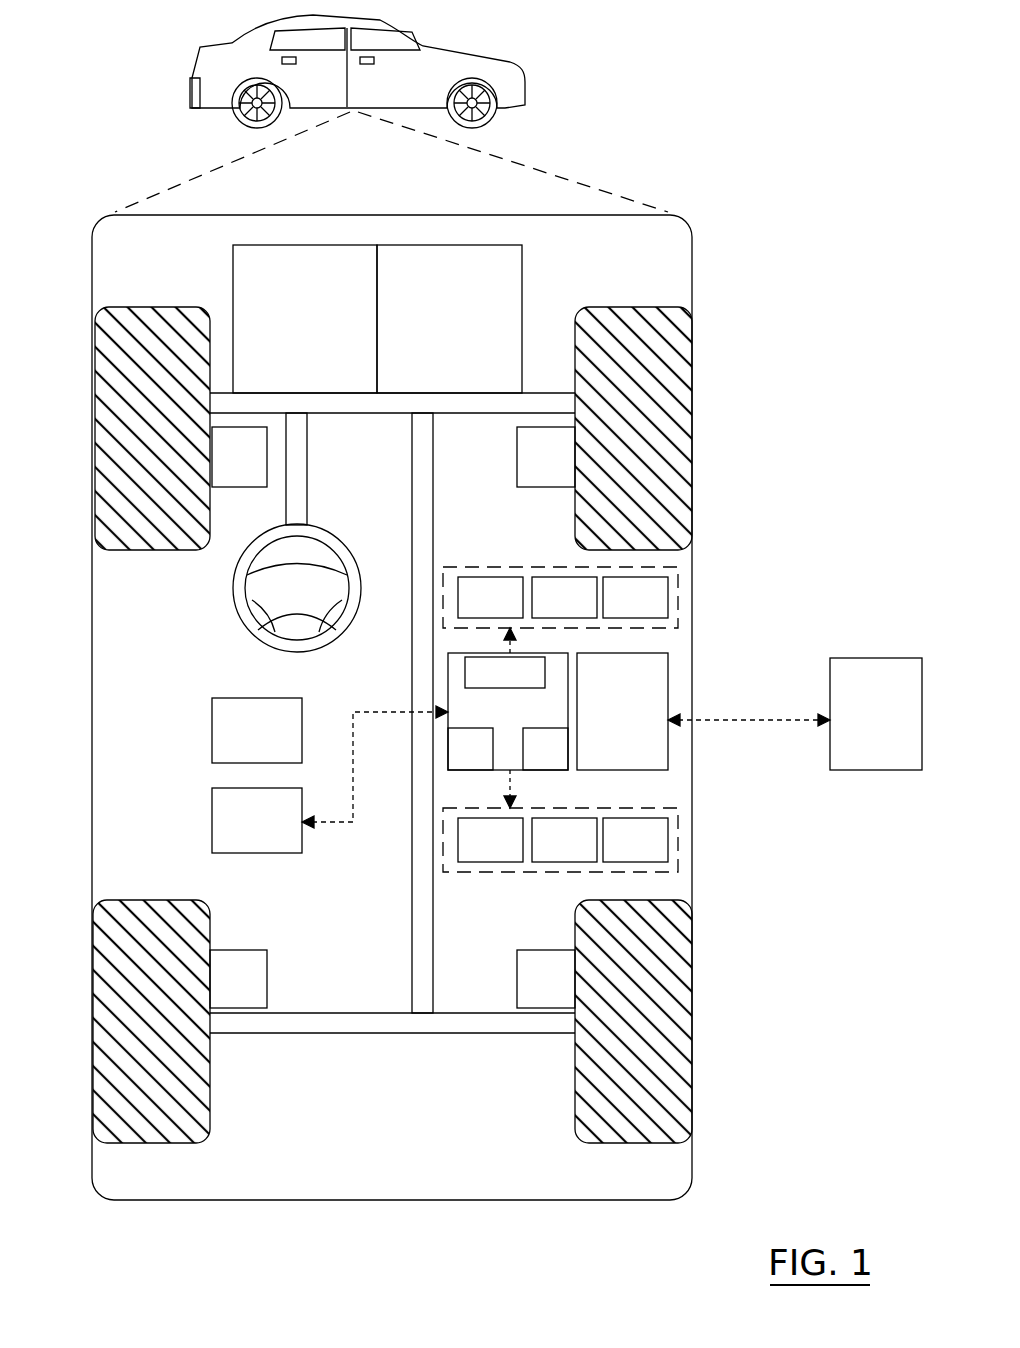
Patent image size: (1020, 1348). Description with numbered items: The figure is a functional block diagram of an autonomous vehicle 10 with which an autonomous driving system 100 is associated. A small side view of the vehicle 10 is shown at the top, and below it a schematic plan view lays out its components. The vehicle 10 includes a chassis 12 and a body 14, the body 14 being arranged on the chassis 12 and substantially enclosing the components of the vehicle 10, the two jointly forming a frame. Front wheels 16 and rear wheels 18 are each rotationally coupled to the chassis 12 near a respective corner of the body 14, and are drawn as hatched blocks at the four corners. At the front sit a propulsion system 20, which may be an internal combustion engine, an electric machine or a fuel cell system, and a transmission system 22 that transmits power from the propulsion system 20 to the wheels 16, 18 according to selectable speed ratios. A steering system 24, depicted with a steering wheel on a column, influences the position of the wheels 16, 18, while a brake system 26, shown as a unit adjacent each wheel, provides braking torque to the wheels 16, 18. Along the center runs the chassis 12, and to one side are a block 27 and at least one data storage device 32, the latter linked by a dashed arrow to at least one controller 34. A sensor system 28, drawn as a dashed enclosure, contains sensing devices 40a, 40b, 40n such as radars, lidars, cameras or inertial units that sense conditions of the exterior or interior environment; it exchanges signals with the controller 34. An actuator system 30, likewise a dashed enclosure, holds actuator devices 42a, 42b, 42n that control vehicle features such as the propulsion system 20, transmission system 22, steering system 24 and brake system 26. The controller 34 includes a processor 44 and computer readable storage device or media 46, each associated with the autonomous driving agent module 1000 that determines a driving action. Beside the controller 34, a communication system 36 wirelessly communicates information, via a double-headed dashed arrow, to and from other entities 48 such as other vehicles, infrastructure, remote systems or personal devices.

The vehicle 10 is at (192, 78).
The autonomous driving system 100 is at (393, 646).
The body 14 is at (92, 700).
The front wheels 16 is at (133, 307).
The rear wheels 18 is at (162, 1143).
The propulsion system 20 is at (287, 333).
The transmission system 22 is at (432, 333).
The steering system 24 is at (316, 445).
The brake system 26 is at (222, 472).
The sensor 27 is at (239, 746).
The data storage device 32 is at (239, 836).
The chassis 12 is at (412, 935).
The sensor system 28 is at (560, 555).
The sensing device 40a is at (464, 612).
The sensing device 40b is at (539, 612).
The sensing device 40n is at (610, 612).
The actuator system 30 is at (560, 893).
The actuator device 42a is at (464, 855).
The actuator device 42b is at (539, 855).
The actuator device 42n is at (610, 855).
The controller 34 is at (508, 718).
The autonomous driving agent module 1000 is at (505, 673).
The processor 44 is at (452, 764).
The computer readable storage device or media 46 is at (528, 764).
The communication system 36 is at (604, 727).
The other entities 48 is at (858, 712).